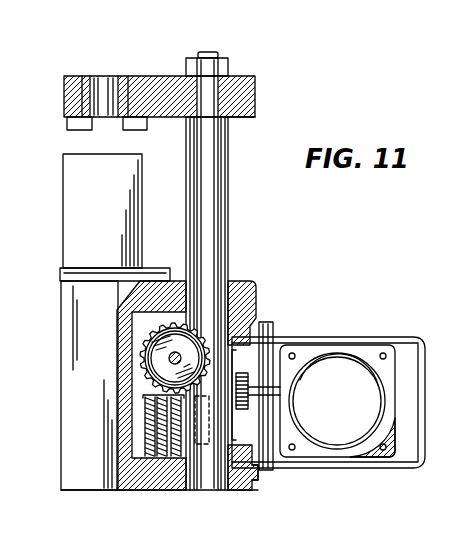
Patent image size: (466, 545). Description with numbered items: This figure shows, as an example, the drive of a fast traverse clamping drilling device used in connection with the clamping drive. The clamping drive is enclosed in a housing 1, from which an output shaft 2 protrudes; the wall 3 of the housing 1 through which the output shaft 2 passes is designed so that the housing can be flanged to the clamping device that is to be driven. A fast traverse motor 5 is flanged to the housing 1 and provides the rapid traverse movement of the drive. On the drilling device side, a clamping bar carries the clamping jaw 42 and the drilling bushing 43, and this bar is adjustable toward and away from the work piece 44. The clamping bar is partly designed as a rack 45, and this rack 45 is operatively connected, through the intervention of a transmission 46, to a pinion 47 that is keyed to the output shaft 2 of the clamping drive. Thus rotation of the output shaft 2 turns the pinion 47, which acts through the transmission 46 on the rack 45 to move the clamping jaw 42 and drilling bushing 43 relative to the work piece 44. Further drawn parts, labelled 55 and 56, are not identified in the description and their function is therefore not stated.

The housing 1 is at (384, 341).
The output shaft 2 is at (252, 390).
The wall 3 is at (258, 478).
The fast traverse motor 5 is at (343, 458).
The clamping jaw 42 is at (168, 118).
The drilling bushing 43 is at (77, 88).
The work piece 44 is at (68, 196).
The rack 45 is at (205, 336).
The transmission 46 is at (172, 456).
The pinion 47 is at (242, 373).
The housing 55 is at (72, 300).
The threaded rod 56 is at (228, 198).